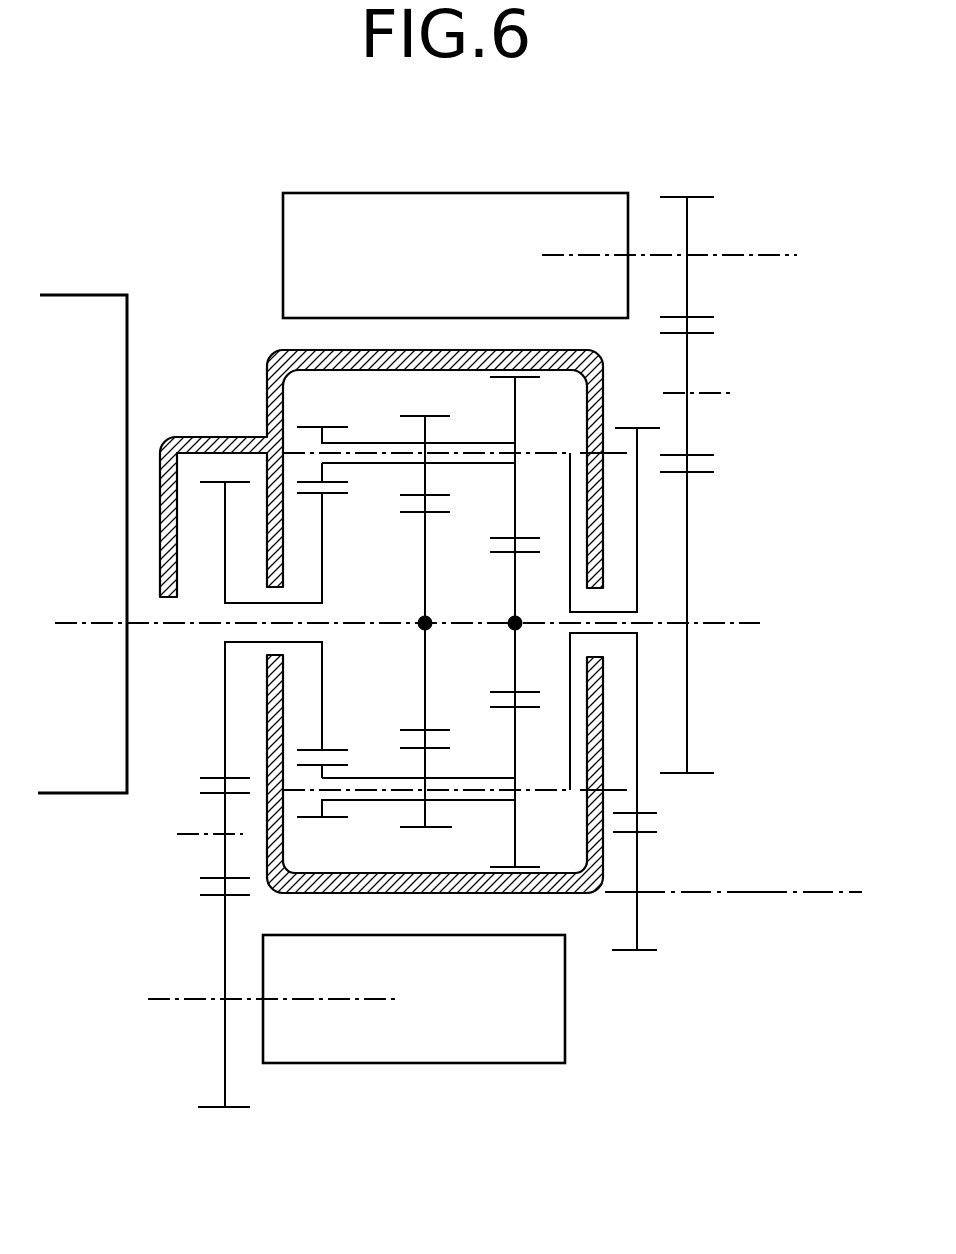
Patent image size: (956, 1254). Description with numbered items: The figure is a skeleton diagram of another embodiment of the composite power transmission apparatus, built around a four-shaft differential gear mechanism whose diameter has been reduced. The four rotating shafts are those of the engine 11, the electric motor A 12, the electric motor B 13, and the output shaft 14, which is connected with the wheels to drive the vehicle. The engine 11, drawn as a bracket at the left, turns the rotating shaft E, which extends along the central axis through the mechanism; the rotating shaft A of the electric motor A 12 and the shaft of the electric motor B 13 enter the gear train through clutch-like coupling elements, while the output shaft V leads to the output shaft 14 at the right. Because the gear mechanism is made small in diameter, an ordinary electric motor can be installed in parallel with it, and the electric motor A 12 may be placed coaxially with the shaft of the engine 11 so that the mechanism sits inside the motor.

The engine 11 is at (78, 318).
The electric motor A 12 is at (389, 1045).
The electric motor B 13 is at (490, 210).
The output shaft 14 is at (766, 890).
The rotating shaft of electric motor A is at (346, 767).
The electric motor B is at (647, 791).
The rotating shaft of the engine E is at (90, 579).
The output shaft V is at (621, 520).